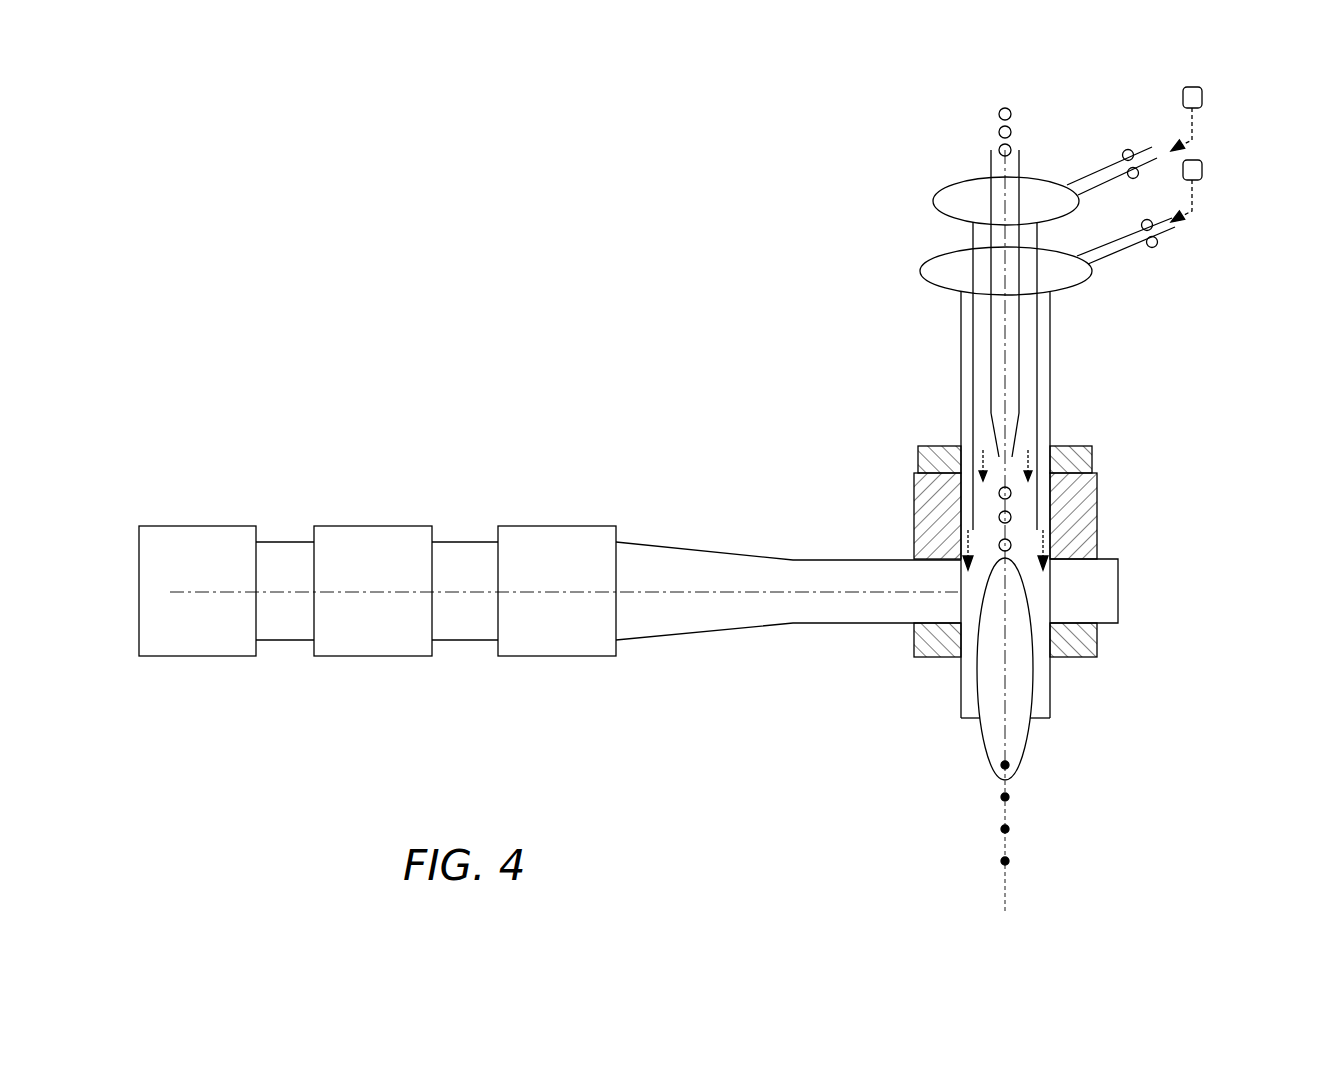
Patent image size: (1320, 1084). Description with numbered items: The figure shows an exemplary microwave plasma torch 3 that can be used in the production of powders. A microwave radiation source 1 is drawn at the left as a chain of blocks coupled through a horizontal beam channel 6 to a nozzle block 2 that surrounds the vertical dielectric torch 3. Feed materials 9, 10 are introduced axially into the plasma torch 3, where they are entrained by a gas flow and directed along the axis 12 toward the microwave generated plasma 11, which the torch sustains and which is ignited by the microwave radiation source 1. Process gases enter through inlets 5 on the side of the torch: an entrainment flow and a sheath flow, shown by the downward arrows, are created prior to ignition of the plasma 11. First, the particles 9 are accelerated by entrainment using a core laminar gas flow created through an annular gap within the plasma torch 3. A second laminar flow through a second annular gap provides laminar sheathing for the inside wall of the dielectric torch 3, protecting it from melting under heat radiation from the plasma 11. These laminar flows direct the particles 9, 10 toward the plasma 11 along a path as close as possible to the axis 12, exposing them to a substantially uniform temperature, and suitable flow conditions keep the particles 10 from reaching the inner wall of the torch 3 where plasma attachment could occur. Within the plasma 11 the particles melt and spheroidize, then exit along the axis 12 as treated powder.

The microwave radiation source 1 is at (292, 478).
The nozzle block 2 is at (853, 420).
The microwave plasma torch 3 is at (888, 257).
The inlets 5 is at (1212, 146).
The laser beam channel 6 is at (1032, 590).
The feed materials 9 is at (997, 132).
The feed materials 10 is at (998, 516).
The microwave generated plasma 11 is at (1027, 748).
The axis 12 is at (1012, 830).